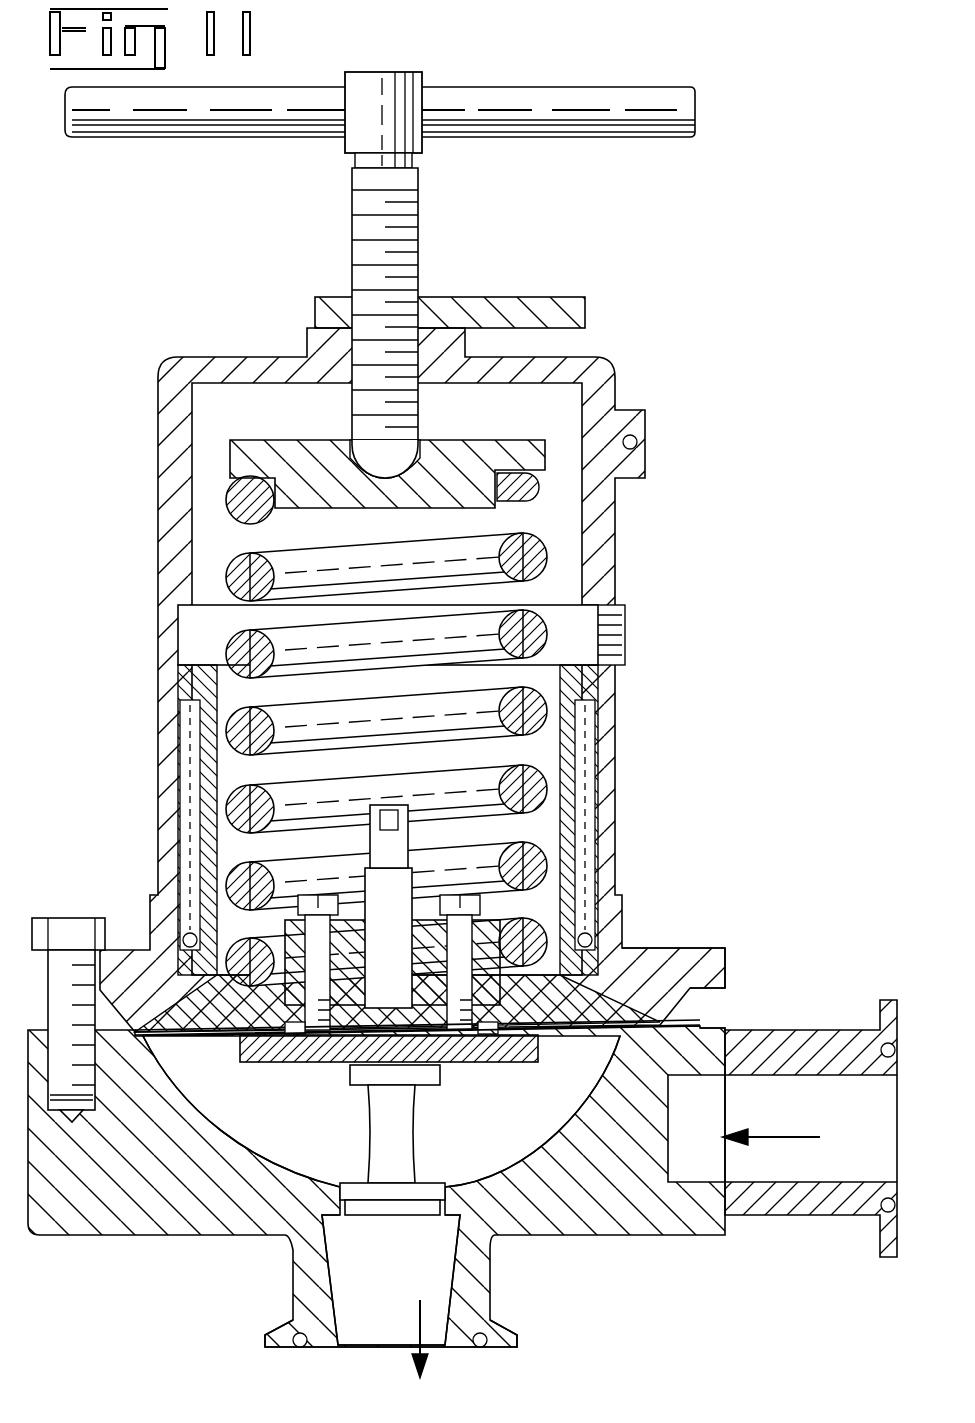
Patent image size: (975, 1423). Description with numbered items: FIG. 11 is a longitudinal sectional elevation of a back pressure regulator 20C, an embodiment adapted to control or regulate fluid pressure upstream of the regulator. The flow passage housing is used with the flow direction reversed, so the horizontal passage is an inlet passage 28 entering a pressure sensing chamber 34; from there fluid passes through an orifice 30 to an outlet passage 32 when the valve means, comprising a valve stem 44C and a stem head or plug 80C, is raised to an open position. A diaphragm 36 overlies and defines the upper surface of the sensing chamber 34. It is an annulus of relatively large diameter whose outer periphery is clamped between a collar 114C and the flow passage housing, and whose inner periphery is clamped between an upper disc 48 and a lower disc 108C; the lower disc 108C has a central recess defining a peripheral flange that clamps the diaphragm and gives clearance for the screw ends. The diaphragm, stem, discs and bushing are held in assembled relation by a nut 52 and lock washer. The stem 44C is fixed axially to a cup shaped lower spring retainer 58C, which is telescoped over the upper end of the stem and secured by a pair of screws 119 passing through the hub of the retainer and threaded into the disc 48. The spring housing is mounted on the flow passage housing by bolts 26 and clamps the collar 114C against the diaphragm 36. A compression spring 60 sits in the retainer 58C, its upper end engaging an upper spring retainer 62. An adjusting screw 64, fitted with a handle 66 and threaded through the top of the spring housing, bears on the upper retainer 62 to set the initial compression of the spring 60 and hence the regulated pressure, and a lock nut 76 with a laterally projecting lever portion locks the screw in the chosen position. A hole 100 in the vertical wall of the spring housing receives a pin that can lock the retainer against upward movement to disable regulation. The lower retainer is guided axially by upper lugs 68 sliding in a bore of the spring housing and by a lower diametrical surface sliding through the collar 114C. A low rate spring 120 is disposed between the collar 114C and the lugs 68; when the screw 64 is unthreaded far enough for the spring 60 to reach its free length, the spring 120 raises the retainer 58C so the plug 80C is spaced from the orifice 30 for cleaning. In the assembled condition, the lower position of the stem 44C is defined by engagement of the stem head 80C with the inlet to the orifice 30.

The regulator 20C is at (706, 338).
The handle 66 is at (622, 88).
The adjusting screw 64 is at (418, 212).
The lock nut 76 is at (540, 297).
The upper spring retainer 62 is at (542, 440).
The compression spring 60 is at (545, 548).
The hole 100 is at (626, 634).
The upper lugs 68 is at (596, 712).
The lower spring retainer 58C is at (618, 778).
The spring 120 is at (182, 740).
The bolts 26 is at (88, 918).
The screws 119 is at (322, 894).
The nut 52 is at (416, 868).
The diaphragm 36 is at (200, 1036).
The lower disc 108C is at (296, 1038).
The pressure sensing chamber 34 is at (345, 1147).
The upper disc 48 is at (546, 1038).
The valve stem 44C is at (414, 1110).
The inlet passage 28 is at (560, 1190).
The orifice 30 is at (360, 1202).
The stem head 80C is at (396, 1217).
The outlet passage 32 is at (352, 1322).
The collar 114C is at (698, 994).